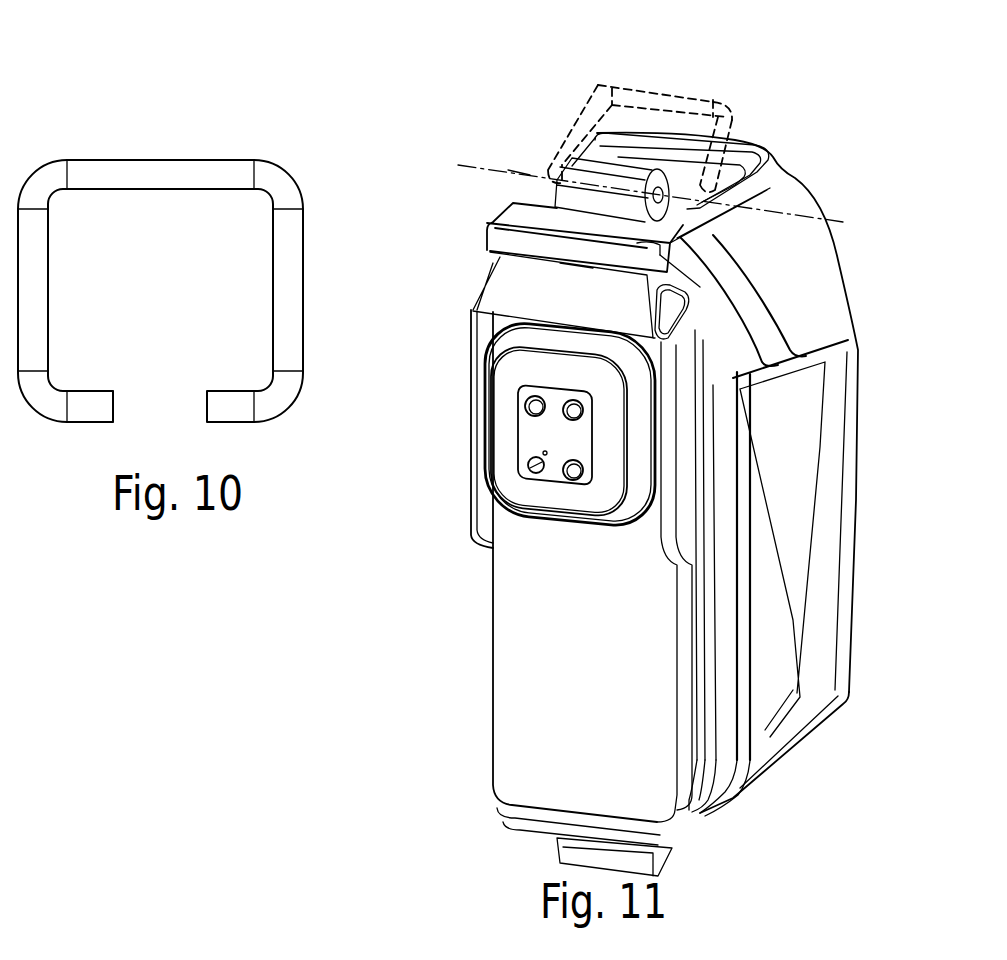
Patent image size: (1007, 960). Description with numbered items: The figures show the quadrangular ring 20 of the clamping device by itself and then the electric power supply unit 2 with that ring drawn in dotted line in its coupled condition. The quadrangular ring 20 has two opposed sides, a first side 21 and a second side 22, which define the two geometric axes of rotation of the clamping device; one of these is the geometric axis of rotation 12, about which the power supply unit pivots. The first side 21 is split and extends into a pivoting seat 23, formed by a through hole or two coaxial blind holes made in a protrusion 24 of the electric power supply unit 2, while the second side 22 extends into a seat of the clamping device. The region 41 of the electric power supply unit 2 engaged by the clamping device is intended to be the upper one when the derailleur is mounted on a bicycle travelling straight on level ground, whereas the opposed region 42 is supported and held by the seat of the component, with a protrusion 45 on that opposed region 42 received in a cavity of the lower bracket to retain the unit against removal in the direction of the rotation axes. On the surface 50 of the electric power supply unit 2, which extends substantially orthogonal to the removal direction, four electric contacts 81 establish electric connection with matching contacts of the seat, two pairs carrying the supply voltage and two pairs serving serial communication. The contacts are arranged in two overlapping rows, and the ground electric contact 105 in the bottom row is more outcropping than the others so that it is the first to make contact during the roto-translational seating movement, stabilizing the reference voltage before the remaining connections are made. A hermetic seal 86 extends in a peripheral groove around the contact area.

In FIG. 11, the electric power supply unit 2 is at (410, 662).
In FIG. 11, the geometric axis of rotation 12 is at (508, 170).
In FIG. 10, the quadrangular ring 20 is at (168, 118).
In FIG. 11, the quadrangular ring 20 is at (725, 106).
In FIG. 10, the first side 21 is at (79, 408).
In FIG. 10, the second side 22 is at (145, 174).
In FIG. 11, the pivoting seat 23 is at (603, 213).
In FIG. 11, the protrusion 24 is at (622, 172).
In FIG. 11, the region 41 is at (782, 145).
In FIG. 11, the opposed region 42 is at (745, 830).
In FIG. 11, the protrusion 45 is at (627, 860).
In FIG. 11, the surface 50 is at (600, 706).
In FIG. 11, the electric contacts 81 is at (552, 480).
In FIG. 11, the hermetic seal 86 is at (640, 495).
In FIG. 11, the ground electric contact 105 is at (535, 465).